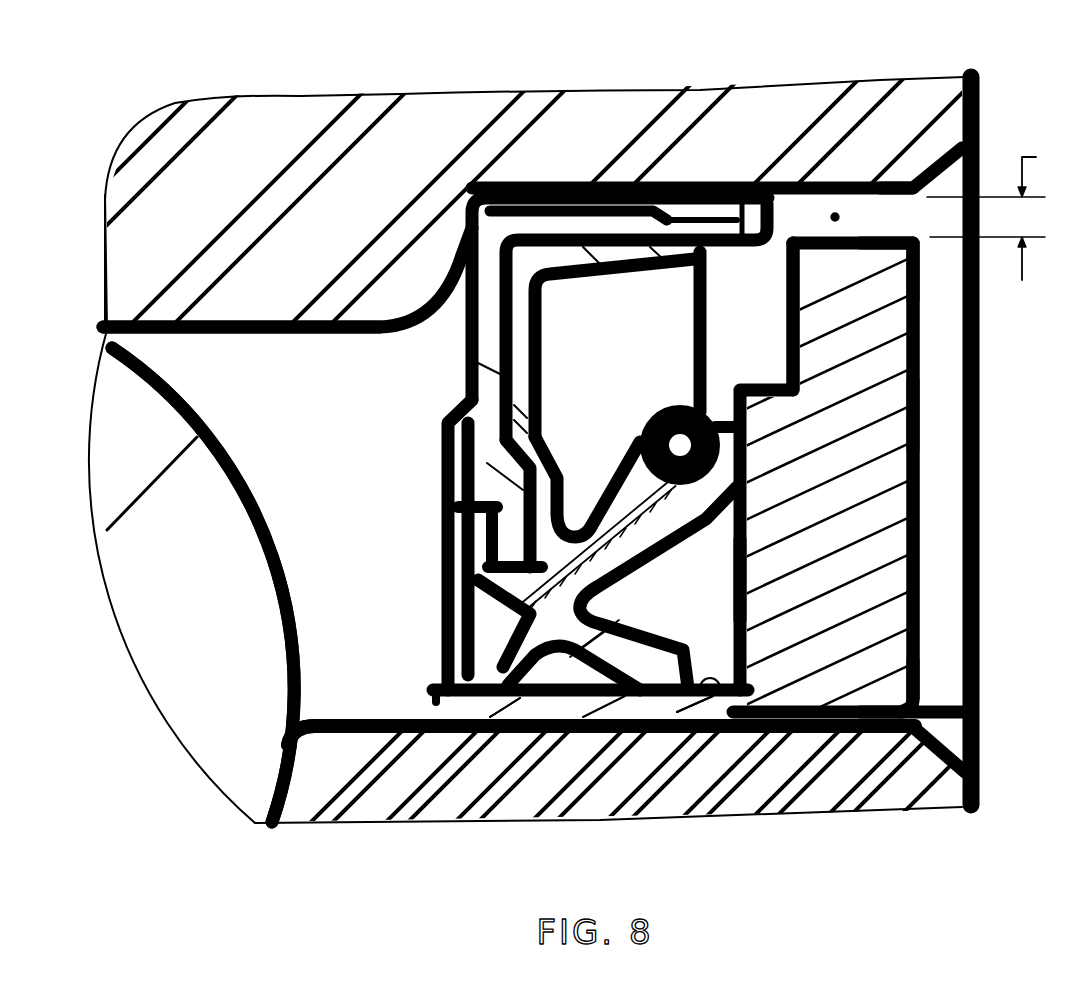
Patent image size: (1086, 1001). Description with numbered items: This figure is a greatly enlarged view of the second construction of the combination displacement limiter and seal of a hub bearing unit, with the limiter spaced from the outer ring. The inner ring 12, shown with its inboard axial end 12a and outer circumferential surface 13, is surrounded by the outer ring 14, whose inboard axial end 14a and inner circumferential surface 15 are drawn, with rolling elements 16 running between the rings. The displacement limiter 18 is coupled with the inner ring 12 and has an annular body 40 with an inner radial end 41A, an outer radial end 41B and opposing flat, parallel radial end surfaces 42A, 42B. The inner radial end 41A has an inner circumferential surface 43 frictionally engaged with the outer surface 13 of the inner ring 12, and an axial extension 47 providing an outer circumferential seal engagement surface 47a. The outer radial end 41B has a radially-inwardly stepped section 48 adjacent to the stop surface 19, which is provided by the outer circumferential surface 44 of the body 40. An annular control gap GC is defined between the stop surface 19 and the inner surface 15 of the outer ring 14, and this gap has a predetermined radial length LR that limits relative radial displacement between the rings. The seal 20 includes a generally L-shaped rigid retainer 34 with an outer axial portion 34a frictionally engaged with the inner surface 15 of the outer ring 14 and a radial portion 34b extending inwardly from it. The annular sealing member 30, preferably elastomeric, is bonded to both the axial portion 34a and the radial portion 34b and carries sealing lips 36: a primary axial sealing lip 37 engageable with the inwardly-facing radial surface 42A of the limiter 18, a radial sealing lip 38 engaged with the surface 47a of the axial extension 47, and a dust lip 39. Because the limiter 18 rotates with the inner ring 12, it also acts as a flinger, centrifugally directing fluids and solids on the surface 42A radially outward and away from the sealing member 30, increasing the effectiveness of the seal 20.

The inner ring 12 is at (380, 815).
The inboard axial end 12a is at (950, 788).
The outer circumferential surface 13 is at (333, 720).
The outer ring 14 is at (465, 90).
The inboard axial end 14a is at (947, 113).
The inner circumferential surface 15 is at (310, 337).
The rolling elements 16 is at (233, 557).
The displacement limiter 18 is at (942, 447).
The stop surface 19 is at (865, 232).
The seal 20 is at (393, 482).
The annular sealing member 30 is at (558, 371).
The rigid retainer 34 is at (445, 362).
The outer axial portion 34a is at (603, 215).
The radial portion 34b is at (478, 431).
The sealing lip 36 is at (725, 477).
The primary axial sealing lip 37 is at (748, 448).
The radial sealing lip 38 is at (643, 667).
The dust lip 39 is at (518, 697).
The annular body 40 is at (925, 493).
The inner radial end 41A is at (883, 693).
The outer radial end 41B is at (893, 262).
The radial end surface 42A is at (737, 578).
The radial end surface 42B is at (923, 413).
The inner circumferential surface 43 is at (850, 733).
The outer circumferential surface 44 is at (897, 238).
The axial extension 47 is at (555, 707).
The outer circumferential seal engagement surface 47a is at (722, 697).
The radially-inwardly stepped section 48 is at (790, 327).
The control gap GC is at (836, 212).
The radial length LR is at (998, 210).